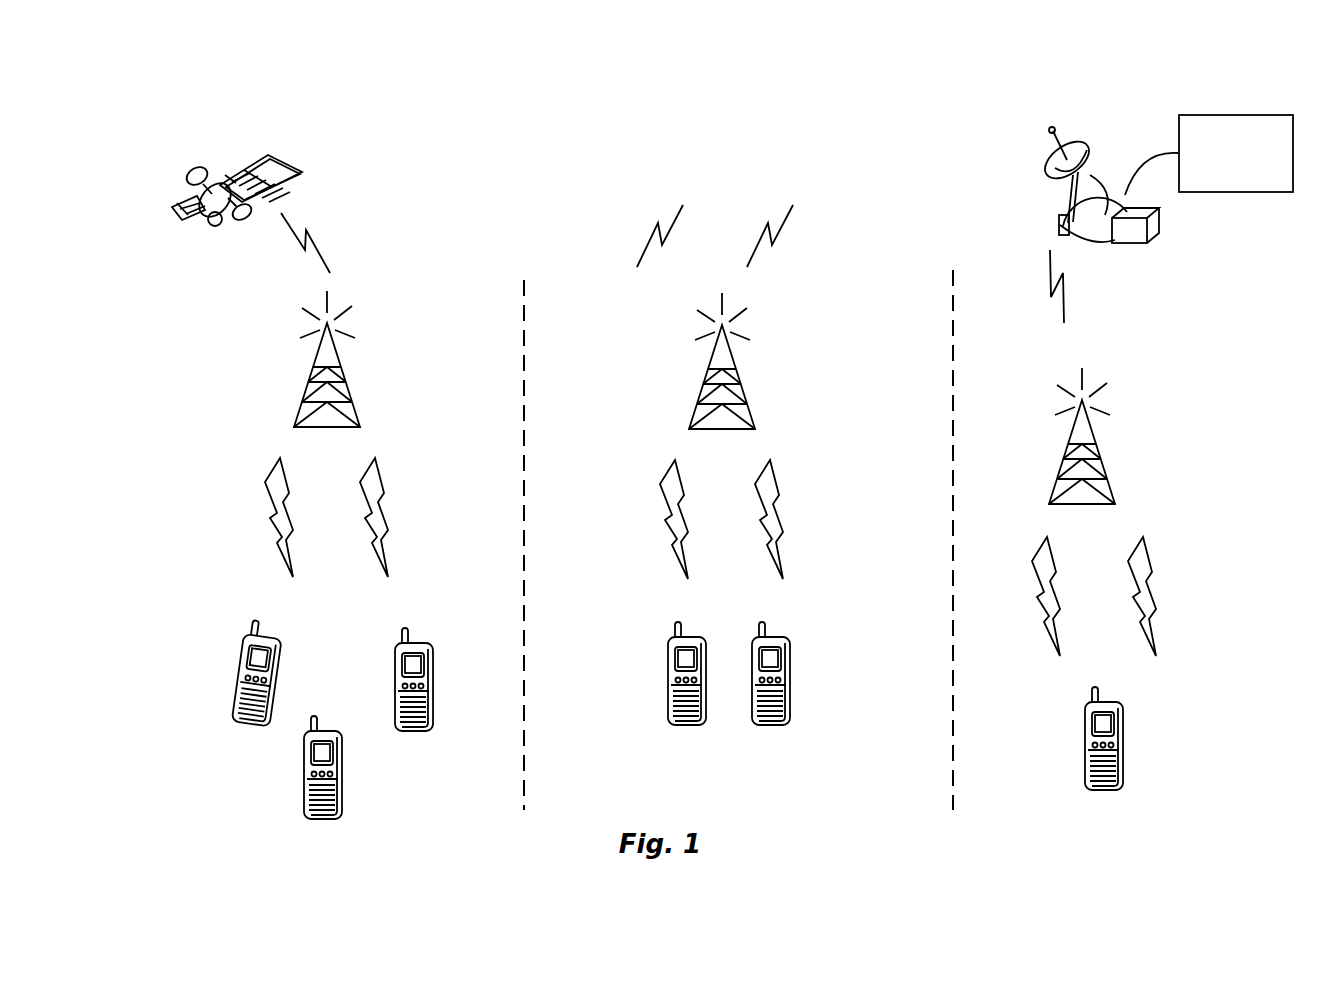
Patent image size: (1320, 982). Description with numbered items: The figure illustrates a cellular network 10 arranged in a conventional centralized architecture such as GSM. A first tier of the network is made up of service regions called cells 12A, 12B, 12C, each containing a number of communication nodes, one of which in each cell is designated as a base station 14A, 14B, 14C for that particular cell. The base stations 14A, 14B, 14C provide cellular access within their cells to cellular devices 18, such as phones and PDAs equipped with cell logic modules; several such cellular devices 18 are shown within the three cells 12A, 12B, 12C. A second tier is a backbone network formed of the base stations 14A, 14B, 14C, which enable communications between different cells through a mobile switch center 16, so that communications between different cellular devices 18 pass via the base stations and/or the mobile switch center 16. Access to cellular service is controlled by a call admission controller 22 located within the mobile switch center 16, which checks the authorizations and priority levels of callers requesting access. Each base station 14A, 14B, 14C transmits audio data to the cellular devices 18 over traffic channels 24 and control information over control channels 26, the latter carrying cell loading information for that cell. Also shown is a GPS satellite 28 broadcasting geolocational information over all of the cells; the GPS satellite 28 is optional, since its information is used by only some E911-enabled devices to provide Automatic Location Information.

The cellular network 10 is at (196, 382).
The cell 12A is at (350, 224).
The cell 12B is at (549, 544).
The cell 12C is at (979, 540).
The base station 14A is at (297, 413).
The base station 14B is at (692, 415).
The base station 14C is at (1058, 478).
The mobile switch center 16 is at (1113, 244).
The cellular device 18 is at (243, 698).
The call admission controller 22 is at (1200, 115).
The traffic channel 24 is at (275, 530).
The control channel 26 is at (383, 523).
The GPS satellite 28 is at (222, 232).